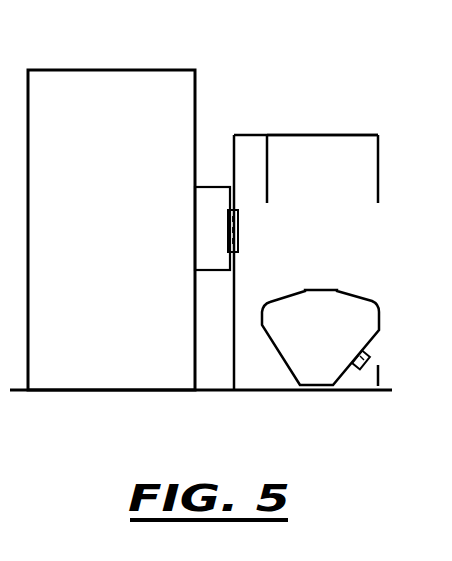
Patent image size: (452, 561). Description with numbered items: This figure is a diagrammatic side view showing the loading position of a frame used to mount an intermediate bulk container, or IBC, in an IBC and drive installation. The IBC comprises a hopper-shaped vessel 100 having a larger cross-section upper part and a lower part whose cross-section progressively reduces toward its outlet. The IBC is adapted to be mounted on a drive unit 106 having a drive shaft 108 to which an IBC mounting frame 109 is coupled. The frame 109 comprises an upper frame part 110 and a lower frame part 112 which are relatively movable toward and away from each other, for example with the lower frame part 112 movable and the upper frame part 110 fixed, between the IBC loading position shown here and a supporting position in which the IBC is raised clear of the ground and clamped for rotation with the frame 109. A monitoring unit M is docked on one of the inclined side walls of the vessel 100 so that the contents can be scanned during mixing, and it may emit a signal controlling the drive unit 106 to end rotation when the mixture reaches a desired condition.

The hopper-shaped vessel 100 is at (282, 296).
The drive unit 106 is at (111, 230).
The drive shaft 108 is at (211, 200).
The IBC mounting frame 109 is at (328, 107).
The upper frame part 110 is at (293, 134).
The lower frame part 112 is at (290, 391).
The monitoring unit M is at (360, 374).